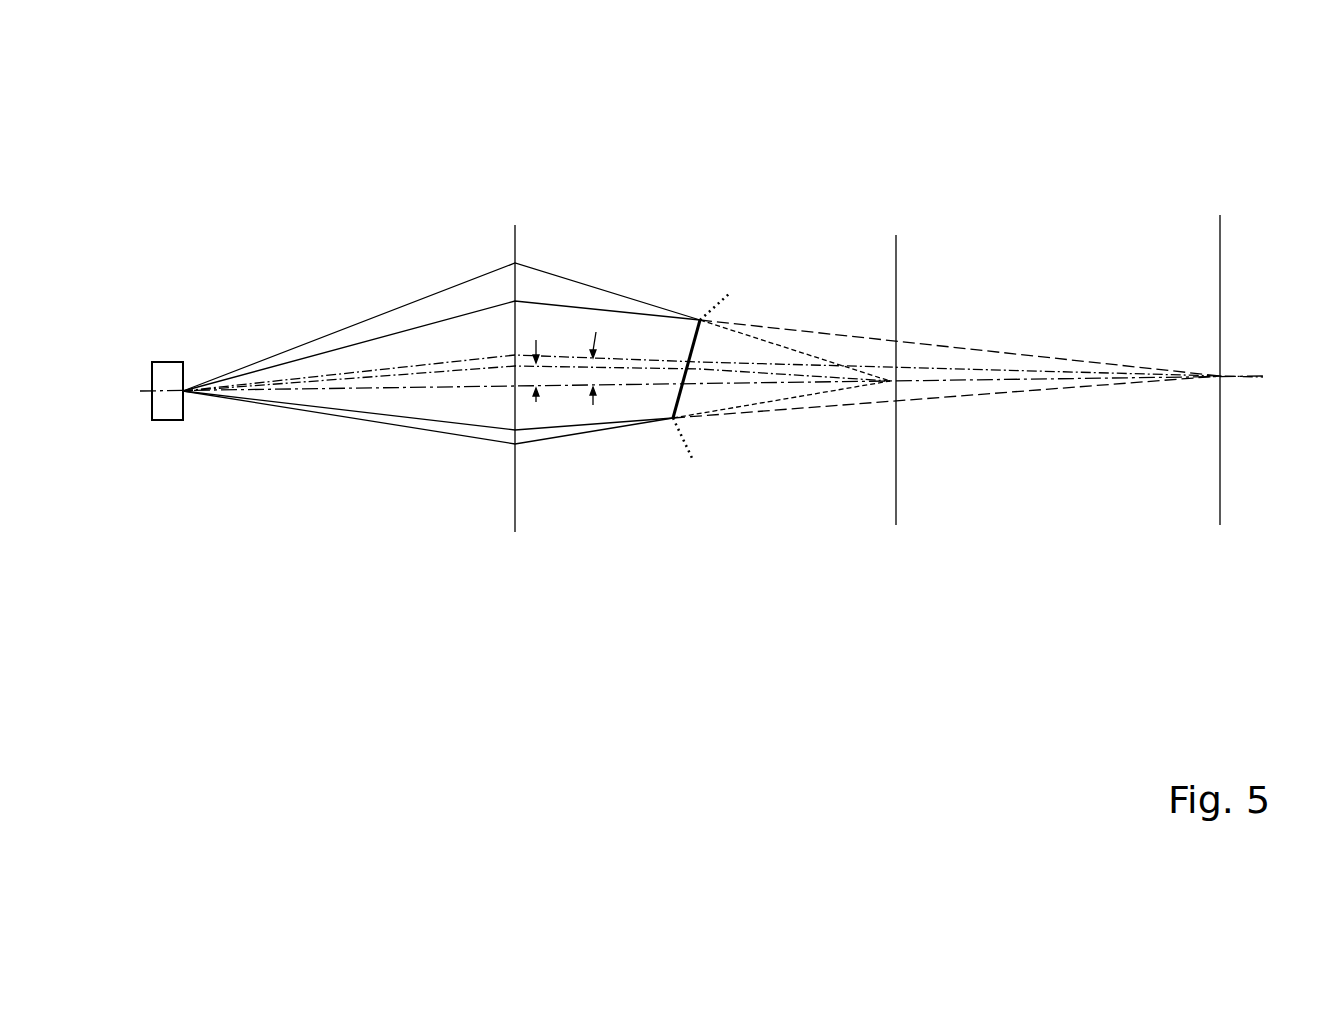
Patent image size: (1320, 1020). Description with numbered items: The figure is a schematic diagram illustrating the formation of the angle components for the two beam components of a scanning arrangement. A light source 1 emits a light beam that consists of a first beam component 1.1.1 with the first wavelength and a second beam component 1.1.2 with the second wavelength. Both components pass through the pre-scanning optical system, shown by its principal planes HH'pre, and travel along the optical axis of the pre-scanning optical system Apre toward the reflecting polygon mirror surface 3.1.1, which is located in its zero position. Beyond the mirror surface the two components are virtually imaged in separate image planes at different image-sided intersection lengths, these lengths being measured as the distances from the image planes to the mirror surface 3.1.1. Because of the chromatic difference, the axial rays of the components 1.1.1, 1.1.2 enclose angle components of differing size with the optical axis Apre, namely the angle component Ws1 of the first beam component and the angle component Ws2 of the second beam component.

The light source 1 is at (170, 410).
The first beam component 1.1.1 is at (256, 357).
The second beam component 1.1.2 is at (413, 327).
The reflecting polygon mirror surface 3.1.1 is at (693, 347).
The pre-scanning optical system HH'pre is at (461, 304).
The optical axis of the pre-scanning optical system Apre is at (453, 387).
The angle component of the second beam component Ws2 is at (537, 403).
The angle component of the first beam component Ws1 is at (592, 405).